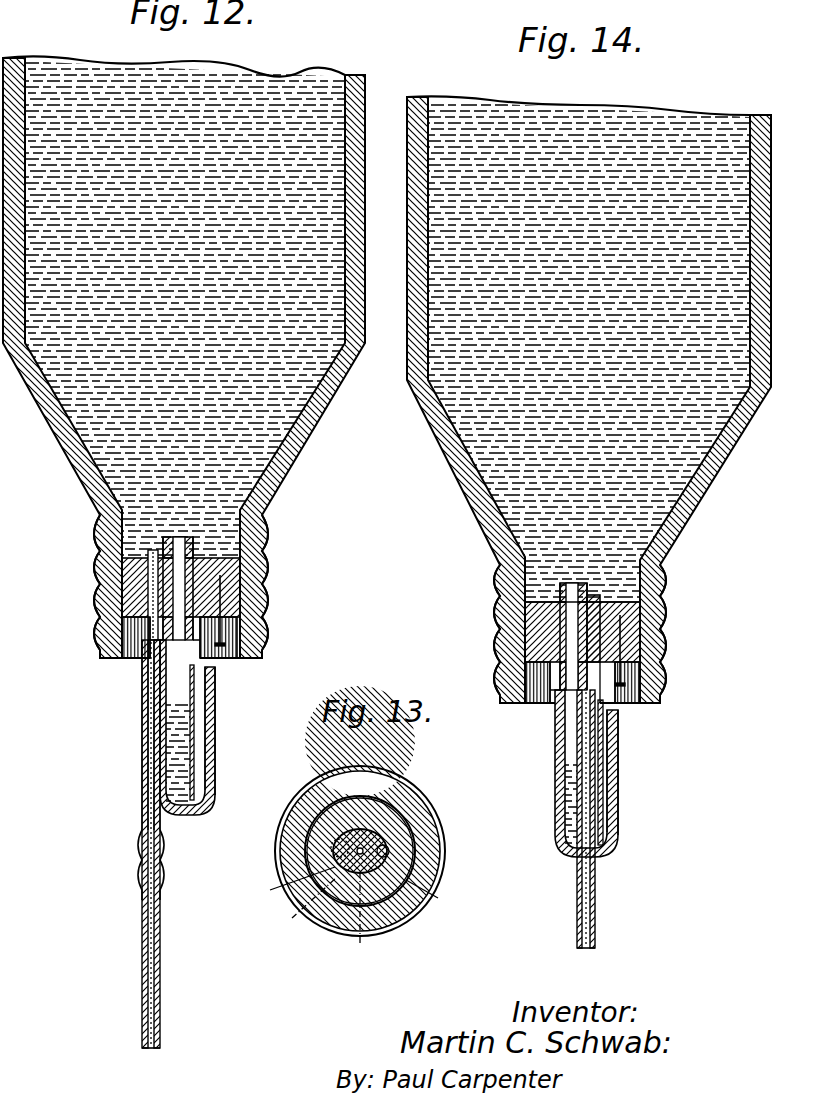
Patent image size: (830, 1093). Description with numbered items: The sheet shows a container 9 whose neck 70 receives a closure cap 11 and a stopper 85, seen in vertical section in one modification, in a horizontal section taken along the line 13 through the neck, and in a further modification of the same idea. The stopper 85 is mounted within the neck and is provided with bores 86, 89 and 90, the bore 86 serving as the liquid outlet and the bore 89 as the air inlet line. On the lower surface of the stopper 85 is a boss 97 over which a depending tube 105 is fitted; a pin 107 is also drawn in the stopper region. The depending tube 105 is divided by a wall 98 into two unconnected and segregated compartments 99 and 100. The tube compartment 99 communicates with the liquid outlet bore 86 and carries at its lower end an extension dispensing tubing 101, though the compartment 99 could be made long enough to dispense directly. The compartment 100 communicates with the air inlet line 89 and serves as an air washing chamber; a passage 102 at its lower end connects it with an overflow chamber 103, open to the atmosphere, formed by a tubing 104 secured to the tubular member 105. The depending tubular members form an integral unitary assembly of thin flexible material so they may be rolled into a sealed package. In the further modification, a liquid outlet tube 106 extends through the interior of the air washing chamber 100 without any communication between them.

In FIG. 12, the container 9 is at (318, 408).
In FIG. 14, the container 9 is at (718, 473).
In FIG. 12, the closure cap 11 is at (268, 600).
In FIG. 13, the closure cap 11 is at (408, 797).
In FIG. 14, the closure cap 11 is at (665, 627).
In FIG. 12, the section line 13— 13 is at (80, 606).
In FIG. 12, the threaded neck 70 is at (266, 540).
In FIG. 13, the threaded neck 70 is at (365, 782).
In FIG. 14, the threaded neck 70 is at (660, 582).
In FIG. 12, the stopper 85 is at (122, 590).
In FIG. 14, the stopper 85 is at (523, 621).
In FIG. 12, the liquid outlet bore 86 is at (148, 552).
In FIG. 13, the liquid outlet bore 86 is at (338, 840).
In FIG. 14, the liquid outlet bore 86 is at (662, 606).
In FIG. 12, the air inlet line 89 is at (243, 560).
In FIG. 13, the air inlet line 89 is at (381, 823).
In FIG. 14, the air inlet line 89 is at (553, 640).
In FIG. 12, the bore 90 is at (264, 582).
In FIG. 14, the bore 90 is at (640, 645).
In FIG. 12, the boss 97 is at (222, 661).
In FIG. 13, the boss 97 is at (332, 844).
In FIG. 14, the boss 97 is at (620, 682).
In FIG. 12, the wall 98 is at (148, 705).
In FIG. 13, the wall 98 is at (295, 908).
In FIG. 12, the tube compartment 99 is at (142, 746).
In FIG. 13, the tube compartment 99 is at (284, 887).
In FIG. 12, the air washing chamber compartment 100 is at (182, 818).
In FIG. 13, the air washing chamber compartment 100 is at (361, 917).
In FIG. 14, the air washing chamber compartment 100 is at (555, 737).
In FIG. 12, the extension dispensing tubing 101 is at (142, 941).
In FIG. 12, the passage 102 is at (206, 792).
In FIG. 14, the passage 102 is at (608, 851).
In FIG. 12, the overflow chamber 103 is at (206, 722).
In FIG. 13, the overflow chamber 103 is at (446, 897).
In FIG. 14, the overflow chamber 103 is at (600, 779).
In FIG. 12, the tubing 104 is at (214, 702).
In FIG. 13, the tubing 104 is at (400, 857).
In FIG. 14, the tubing 104 is at (613, 806).
In FIG. 12, the depending tube 105 is at (142, 673).
In FIG. 13, the depending tube 105 is at (333, 855).
In FIG. 14, the depending tube 105 is at (556, 806).
In FIG. 14, the liquid outlet tube 106 is at (576, 776).
In FIG. 12, the pin 107 is at (228, 641).
In FIG. 14, the pin 107 is at (628, 680).